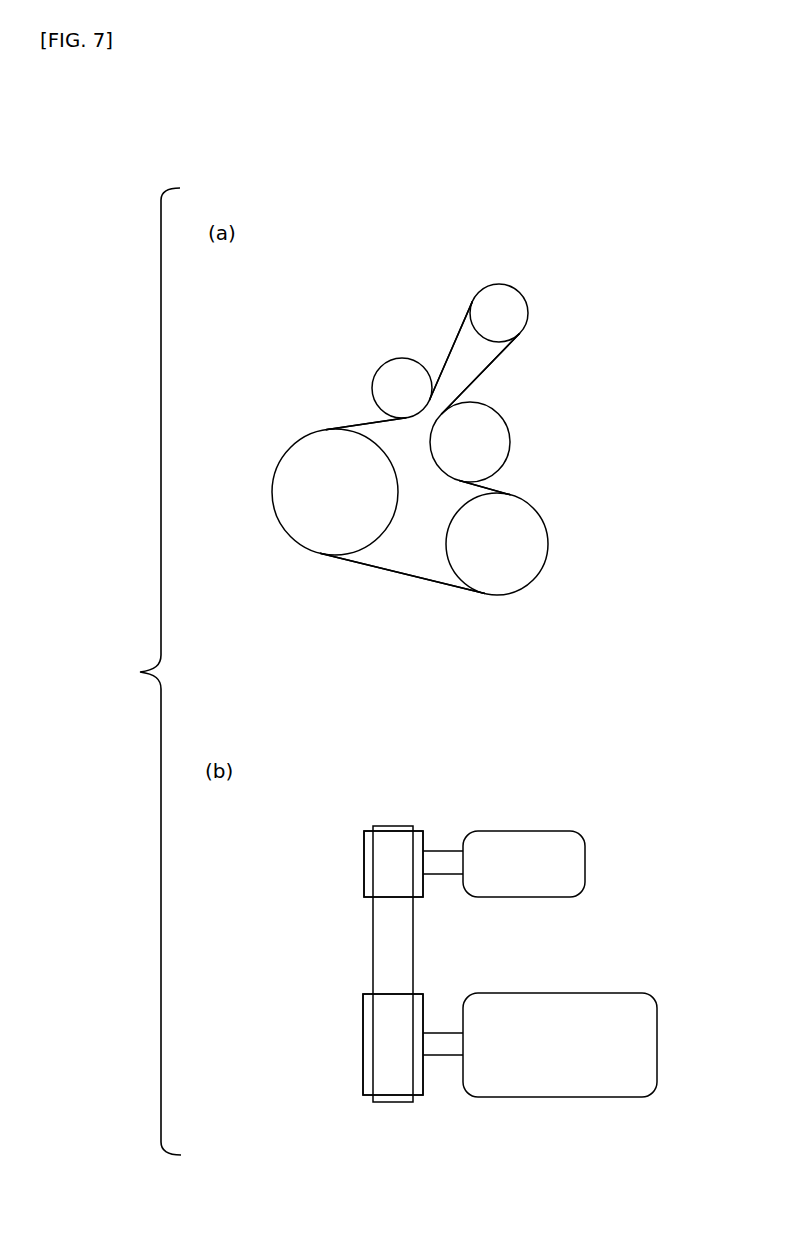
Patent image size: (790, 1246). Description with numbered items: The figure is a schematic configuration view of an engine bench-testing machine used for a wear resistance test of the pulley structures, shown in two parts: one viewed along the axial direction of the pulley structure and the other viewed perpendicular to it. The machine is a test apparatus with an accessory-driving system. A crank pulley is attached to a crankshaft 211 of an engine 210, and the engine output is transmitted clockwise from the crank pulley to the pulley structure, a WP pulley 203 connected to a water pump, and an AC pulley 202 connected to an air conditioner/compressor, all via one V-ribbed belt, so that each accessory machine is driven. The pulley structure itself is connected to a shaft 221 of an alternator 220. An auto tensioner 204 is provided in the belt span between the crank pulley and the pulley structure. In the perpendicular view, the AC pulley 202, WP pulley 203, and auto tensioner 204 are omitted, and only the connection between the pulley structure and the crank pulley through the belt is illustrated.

The AC pulley 202 is at (516, 557).
The WP pulley 203 is at (489, 456).
The auto tensioner 204 is at (421, 402).
The engine 210 is at (617, 1000).
The crankshaft 211 is at (440, 1040).
The alternator 220 is at (524, 831).
The shaft 221 is at (443, 855).